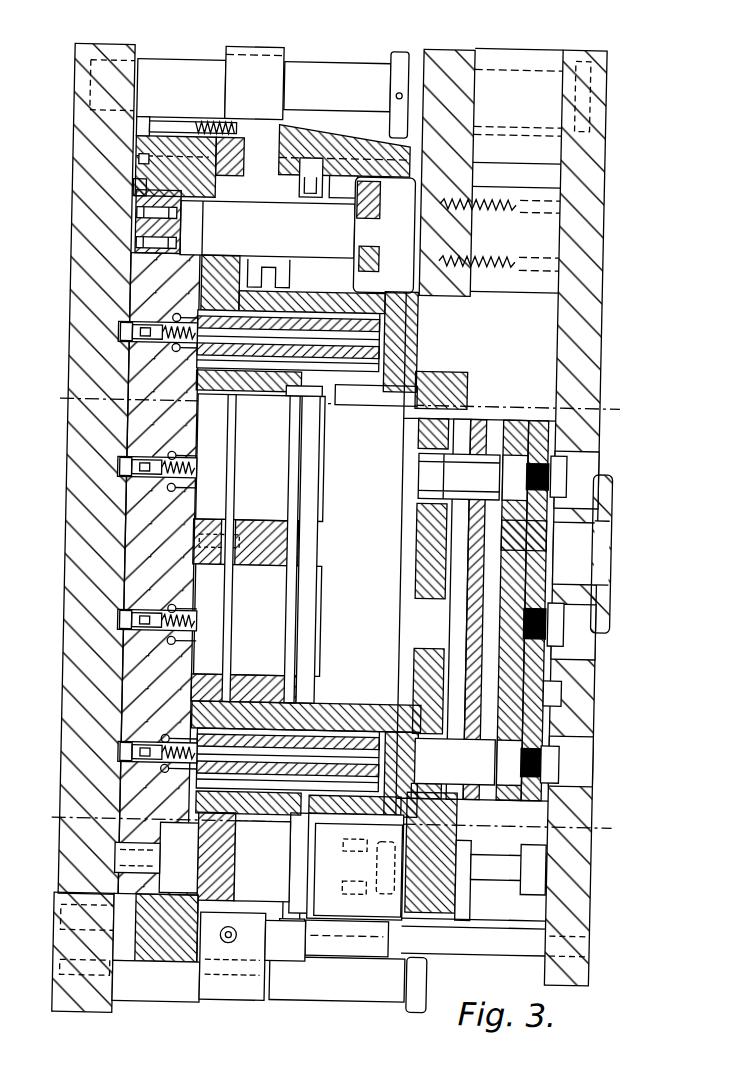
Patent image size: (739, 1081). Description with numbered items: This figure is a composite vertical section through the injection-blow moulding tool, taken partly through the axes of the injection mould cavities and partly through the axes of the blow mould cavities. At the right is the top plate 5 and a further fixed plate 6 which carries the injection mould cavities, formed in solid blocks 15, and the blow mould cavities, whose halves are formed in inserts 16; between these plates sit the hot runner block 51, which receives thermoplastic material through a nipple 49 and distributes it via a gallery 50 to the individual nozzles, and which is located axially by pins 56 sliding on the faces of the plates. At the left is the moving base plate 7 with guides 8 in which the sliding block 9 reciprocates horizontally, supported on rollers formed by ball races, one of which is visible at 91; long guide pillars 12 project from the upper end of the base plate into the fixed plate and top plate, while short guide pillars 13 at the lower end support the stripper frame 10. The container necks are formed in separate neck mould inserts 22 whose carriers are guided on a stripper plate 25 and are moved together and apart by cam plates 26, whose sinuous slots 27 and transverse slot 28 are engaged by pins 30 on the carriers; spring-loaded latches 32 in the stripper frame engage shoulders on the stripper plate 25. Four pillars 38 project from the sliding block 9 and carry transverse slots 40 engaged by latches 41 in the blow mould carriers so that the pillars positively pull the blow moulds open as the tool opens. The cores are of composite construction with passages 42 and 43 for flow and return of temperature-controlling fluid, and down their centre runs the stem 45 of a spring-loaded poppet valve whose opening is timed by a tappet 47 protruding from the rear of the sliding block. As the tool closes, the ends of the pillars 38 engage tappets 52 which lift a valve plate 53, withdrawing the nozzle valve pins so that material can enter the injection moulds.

The top plate 5 is at (591, 358).
The fixed plate 6 is at (455, 388).
The moving base plate 7 is at (82, 510).
The guides 8 is at (181, 122).
The sliding block 9 is at (143, 527).
The stripper frame 10 is at (258, 998).
The long guide pillars 12 is at (544, 104).
The short guide pillars 13 is at (408, 993).
The injection mould cavity blocks 15 is at (349, 712).
The blow mould cavity inserts 16 is at (378, 300).
The neck mould inserts 22 is at (319, 463).
The stripper plate 25 is at (279, 876).
The cam plates 26 is at (375, 945).
The sinuous slots 27 is at (334, 167).
The transverse slot 28 is at (324, 925).
The pins 30 is at (302, 167).
The spring-loaded latches 32 is at (216, 938).
The pillars 38 is at (277, 239).
The transverse slots 40 is at (399, 868).
The latches 41 is at (362, 254).
The flow passage 42 is at (378, 370).
The return passage 43 is at (222, 315).
The valve stem 45 is at (203, 349).
The tappet 47 is at (119, 338).
The nipple 49 is at (547, 553).
The gallery 50 is at (463, 566).
The hot runner block 51 is at (497, 584).
The tappets 52 is at (480, 873).
The valve plate 53 is at (540, 887).
The pins 56 is at (566, 691).
The element 91 is at (182, 867).